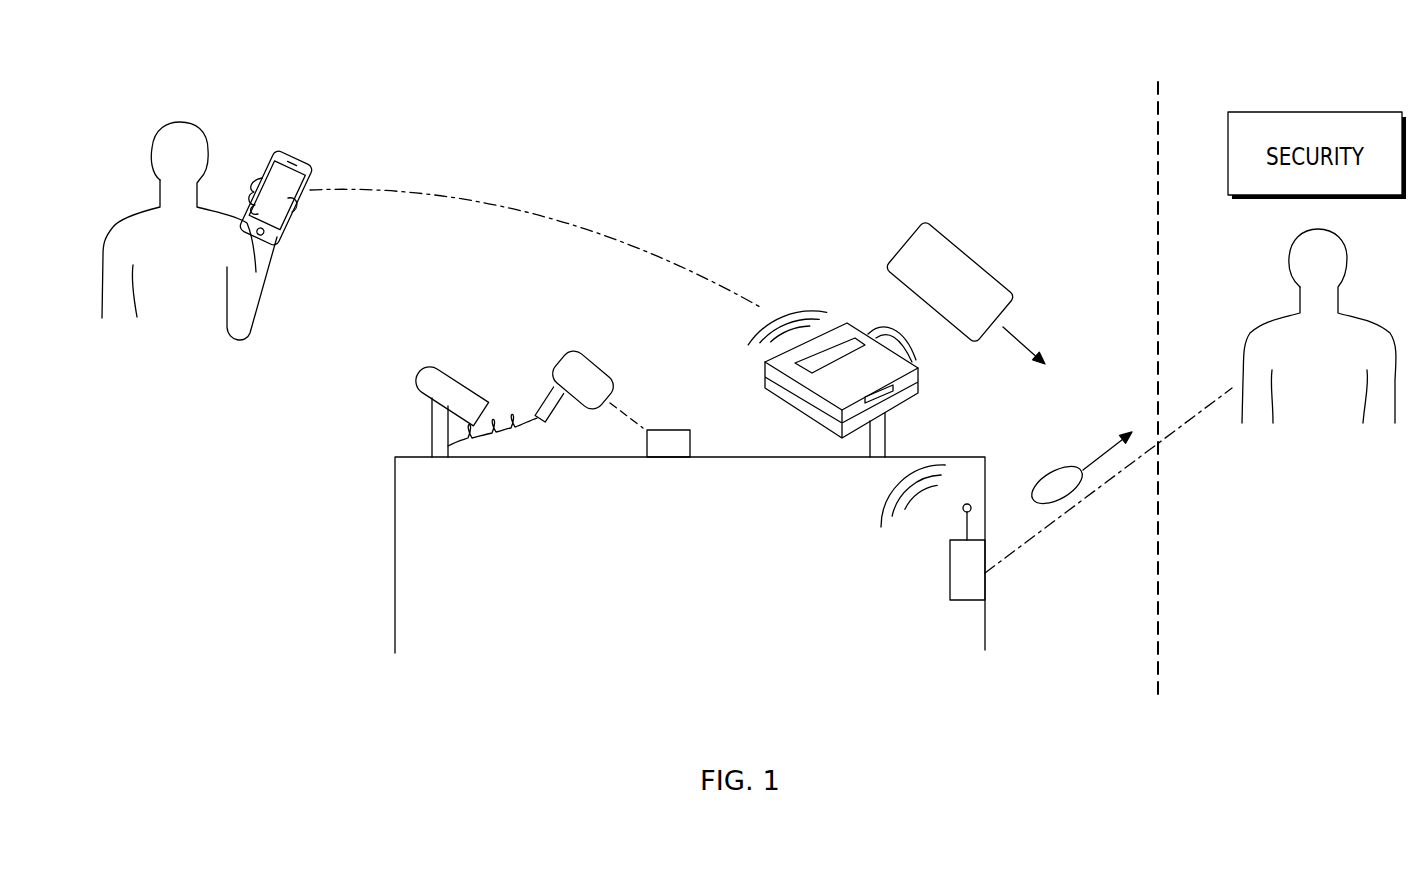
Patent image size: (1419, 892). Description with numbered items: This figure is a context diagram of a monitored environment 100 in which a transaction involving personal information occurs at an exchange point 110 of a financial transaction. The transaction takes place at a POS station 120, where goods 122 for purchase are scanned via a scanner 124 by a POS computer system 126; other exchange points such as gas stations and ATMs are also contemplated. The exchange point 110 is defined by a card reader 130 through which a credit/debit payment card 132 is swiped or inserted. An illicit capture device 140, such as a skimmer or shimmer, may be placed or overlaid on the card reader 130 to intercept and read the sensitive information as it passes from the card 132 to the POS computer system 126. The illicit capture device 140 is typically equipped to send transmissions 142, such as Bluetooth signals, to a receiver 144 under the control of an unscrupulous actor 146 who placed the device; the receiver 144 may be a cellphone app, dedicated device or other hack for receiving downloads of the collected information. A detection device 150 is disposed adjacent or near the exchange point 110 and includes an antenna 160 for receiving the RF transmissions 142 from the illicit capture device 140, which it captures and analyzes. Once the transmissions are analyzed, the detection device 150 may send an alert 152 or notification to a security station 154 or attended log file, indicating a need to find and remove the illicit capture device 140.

The monitored environment 100 is at (222, 494).
The exchange point 110 is at (938, 393).
The POS station 120 is at (395, 586).
The goods 122 is at (668, 456).
The scanner 124 is at (588, 360).
The POS computer system 126 is at (430, 360).
The card reader 130 is at (798, 407).
The credit/debit payment card 132 is at (985, 270).
The illicit capture device 140 is at (765, 362).
The transmissions 142 is at (797, 300).
The receiver 144 is at (292, 160).
The unscrupulous actor 146 is at (162, 130).
The detection device 150 is at (950, 587).
The alert 152 is at (1060, 466).
The security station 154 is at (1409, 304).
The antenna 160 is at (965, 522).